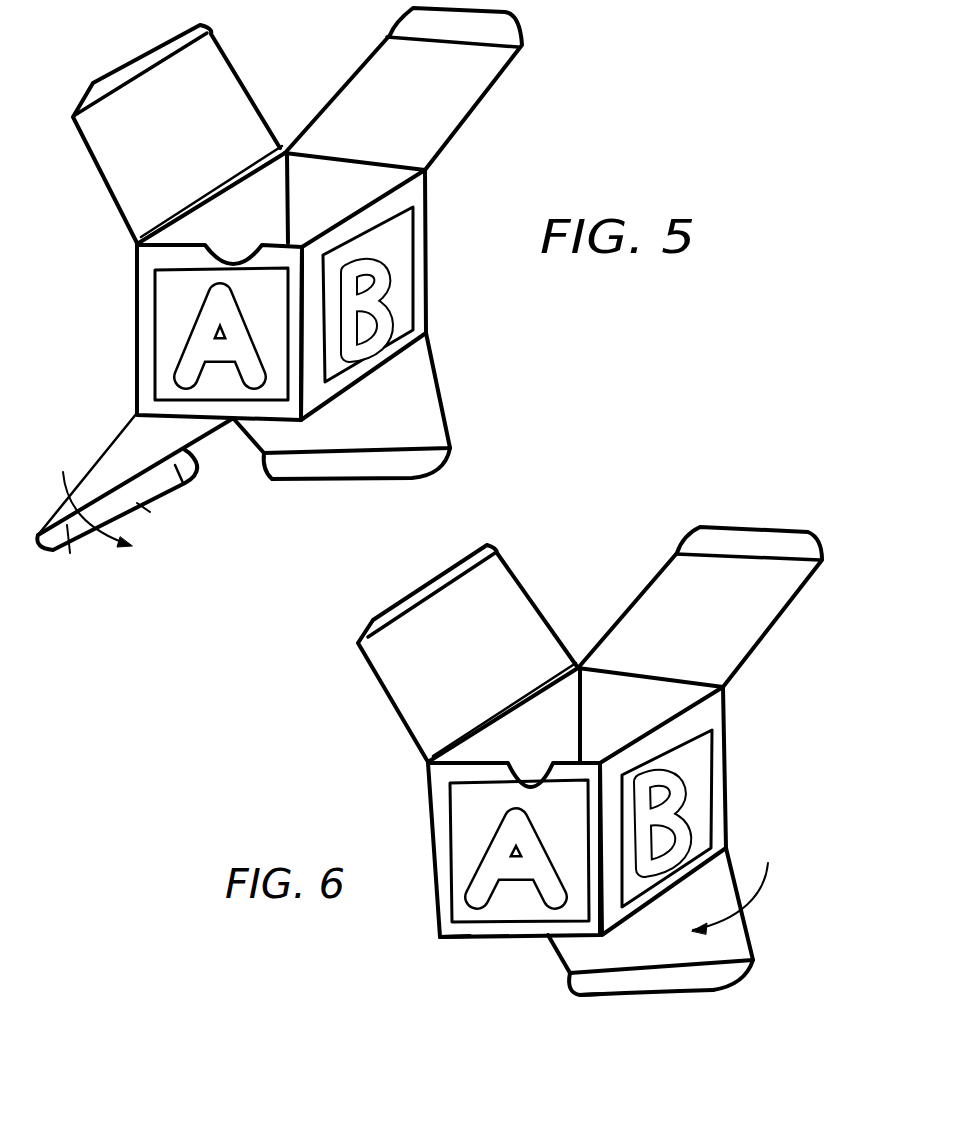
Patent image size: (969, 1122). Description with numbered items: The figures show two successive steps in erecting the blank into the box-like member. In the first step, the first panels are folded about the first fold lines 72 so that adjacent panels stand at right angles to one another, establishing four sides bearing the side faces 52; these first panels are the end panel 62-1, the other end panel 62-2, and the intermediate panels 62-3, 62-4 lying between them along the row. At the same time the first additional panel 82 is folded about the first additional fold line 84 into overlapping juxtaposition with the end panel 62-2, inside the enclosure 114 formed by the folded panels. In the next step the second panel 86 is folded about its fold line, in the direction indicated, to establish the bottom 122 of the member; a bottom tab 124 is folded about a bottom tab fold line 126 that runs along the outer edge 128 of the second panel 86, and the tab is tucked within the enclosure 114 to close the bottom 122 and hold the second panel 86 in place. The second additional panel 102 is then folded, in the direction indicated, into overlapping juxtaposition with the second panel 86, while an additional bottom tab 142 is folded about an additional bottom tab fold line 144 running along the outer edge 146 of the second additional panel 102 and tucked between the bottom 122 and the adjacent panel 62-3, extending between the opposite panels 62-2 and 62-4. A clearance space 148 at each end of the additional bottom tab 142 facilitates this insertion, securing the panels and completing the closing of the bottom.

In FIG. 5, the side face 52 is at (137, 315).
In FIG. 5, the first fold line 72 is at (137, 358).
In FIG. 5, the end panel 62-1 is at (430, 175).
In FIG. 5, the end panel 62-2 is at (133, 267).
In FIG. 5, the intermediate panel 62-3 is at (288, 402).
In FIG. 6, the intermediate panel 62-3 is at (457, 835).
In FIG. 5, the intermediate panel 62-4 is at (413, 330).
In FIG. 6, the intermediate panel 62-4 is at (703, 748).
In FIG. 5, the first additional panel 82 is at (287, 213).
In FIG. 5, the first additional fold line 84 is at (293, 180).
In FIG. 5, the enclosure 114 is at (240, 200).
In FIG. 5, the second panel 86 is at (100, 473).
In FIG. 5, the bottom tab 124 is at (137, 503).
In FIG. 5, the bottom tab fold line 126 is at (181, 488).
In FIG. 5, the outer edge 128 is at (70, 553).
In FIG. 6, the second additional panel 102 is at (732, 935).
In FIG. 6, the bottom 122 is at (462, 935).
In FIG. 6, the additional bottom tab 142 is at (607, 980).
In FIG. 6, the additional bottom tab fold line 144 is at (652, 967).
In FIG. 6, the outer edge 146 is at (713, 965).
In FIG. 6, the clearance space 148 is at (568, 977).